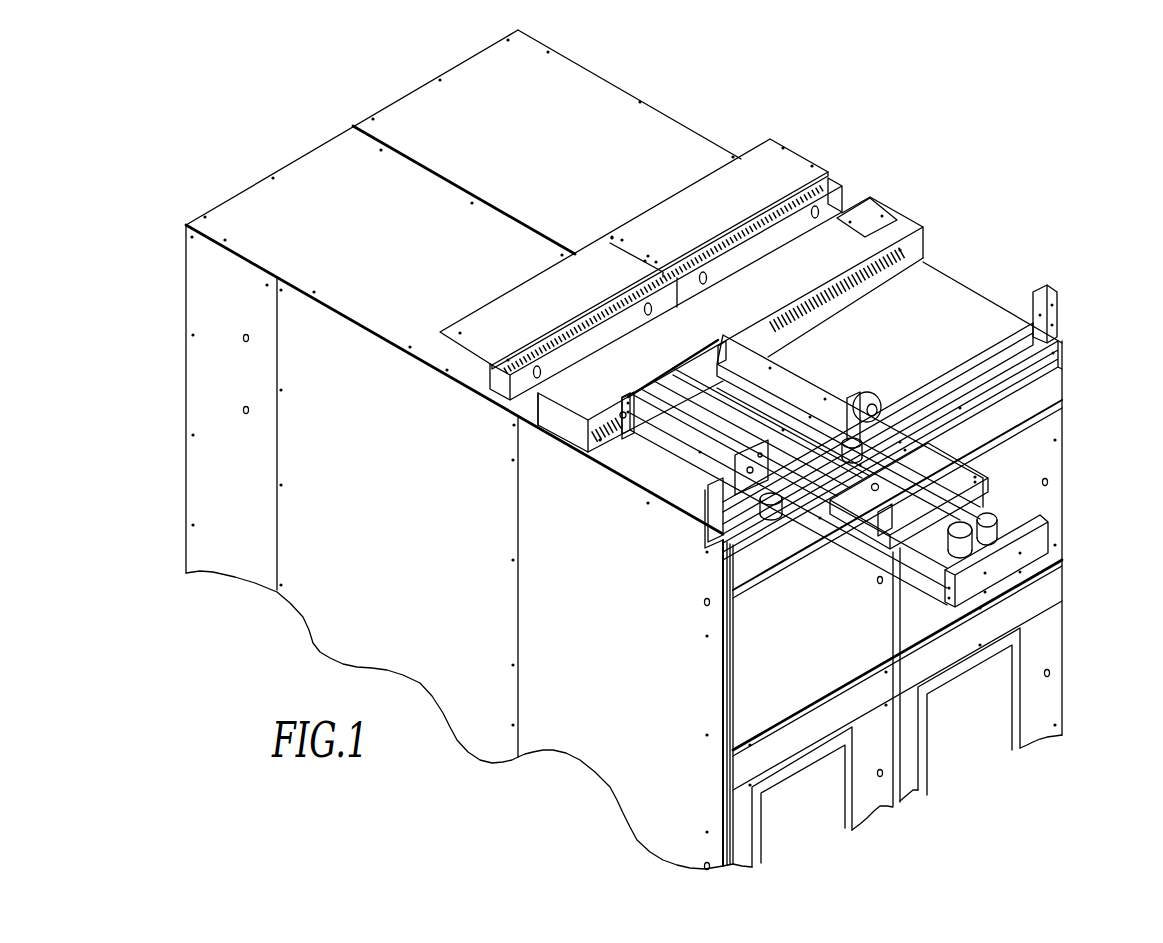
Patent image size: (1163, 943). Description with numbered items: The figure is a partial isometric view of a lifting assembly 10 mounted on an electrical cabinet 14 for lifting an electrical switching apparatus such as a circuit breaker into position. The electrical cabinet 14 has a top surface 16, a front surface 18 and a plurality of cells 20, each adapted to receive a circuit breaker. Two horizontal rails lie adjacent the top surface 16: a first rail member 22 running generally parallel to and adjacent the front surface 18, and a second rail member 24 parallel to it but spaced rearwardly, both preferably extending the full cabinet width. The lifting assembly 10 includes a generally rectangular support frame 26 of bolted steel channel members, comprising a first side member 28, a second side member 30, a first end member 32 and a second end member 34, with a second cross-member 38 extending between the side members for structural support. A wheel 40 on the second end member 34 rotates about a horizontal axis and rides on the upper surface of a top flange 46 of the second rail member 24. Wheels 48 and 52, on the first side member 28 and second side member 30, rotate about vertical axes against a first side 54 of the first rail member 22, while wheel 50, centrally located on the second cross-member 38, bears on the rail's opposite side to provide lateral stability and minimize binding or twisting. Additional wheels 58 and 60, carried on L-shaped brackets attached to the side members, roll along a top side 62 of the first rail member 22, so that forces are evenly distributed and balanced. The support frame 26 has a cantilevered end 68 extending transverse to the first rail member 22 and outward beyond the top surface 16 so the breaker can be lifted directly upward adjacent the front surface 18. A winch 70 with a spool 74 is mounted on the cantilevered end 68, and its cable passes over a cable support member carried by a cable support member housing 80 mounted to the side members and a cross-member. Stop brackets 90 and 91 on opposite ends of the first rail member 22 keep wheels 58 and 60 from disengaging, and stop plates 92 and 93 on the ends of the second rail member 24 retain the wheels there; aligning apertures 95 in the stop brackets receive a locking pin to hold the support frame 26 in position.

The lifting assembly 10 is at (590, 455).
The electrical cabinet 14 is at (598, 72).
The top surface 16 is at (418, 110).
The front surface 18 is at (1047, 438).
The cells 20 is at (975, 735).
The first rail member 22 is at (865, 448).
The second rail member 24 is at (878, 196).
The support frame 26 is at (779, 458).
The first side member 28 is at (650, 440).
The second side member 30 is at (764, 325).
The first end member 32 is at (1033, 503).
The second end member 34 is at (690, 375).
The second cross-member 38 is at (790, 420).
The wheel 40 is at (616, 410).
The top flange 46 is at (902, 206).
The wheel 48 is at (778, 520).
The wheel 50 is at (753, 442).
The wheel 52 is at (852, 440).
The first side 54 is at (1052, 366).
The wheel 58 is at (715, 497).
The wheel 60 is at (876, 400).
The top side 62 is at (1010, 338).
The cantilevered end 68 is at (982, 524).
The winch 70 is at (998, 532).
The spool 74 is at (932, 528).
The cable support member housing 80 is at (885, 517).
The stop bracket 90 is at (712, 505).
The stop bracket 91 is at (1045, 292).
The stop plate 92 is at (580, 438).
The stop plate 93 is at (922, 248).
The aligning apertures 95 is at (1054, 330).